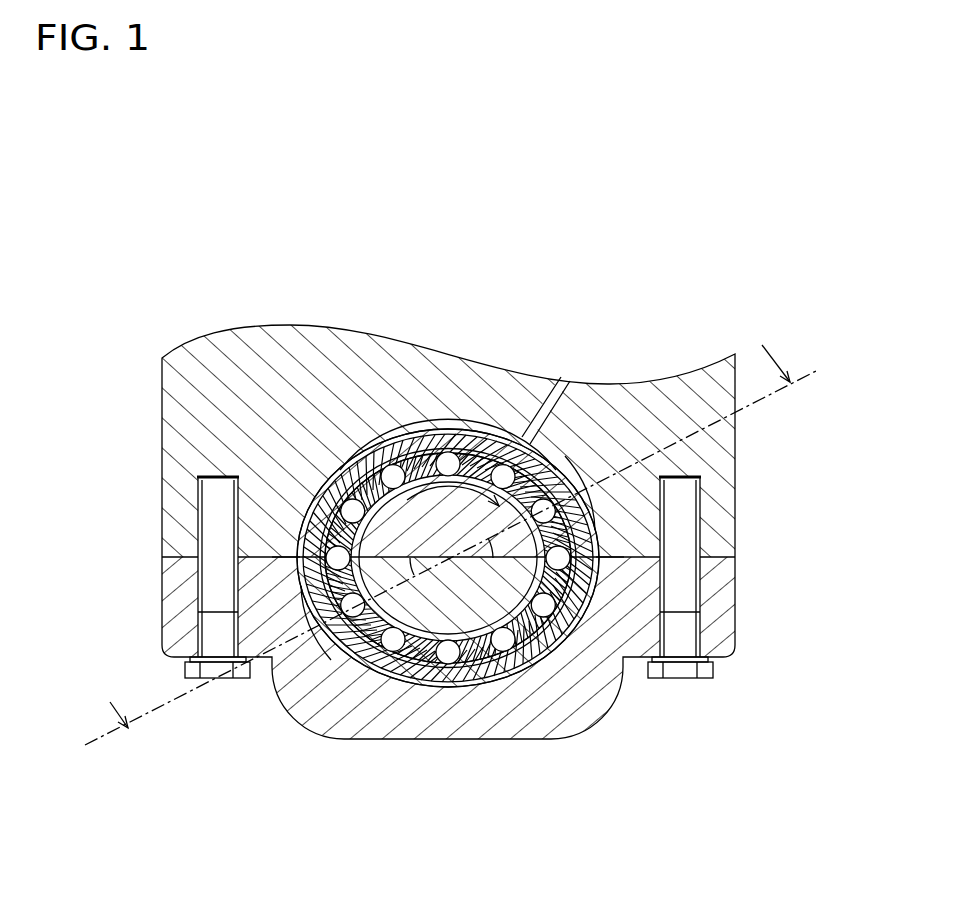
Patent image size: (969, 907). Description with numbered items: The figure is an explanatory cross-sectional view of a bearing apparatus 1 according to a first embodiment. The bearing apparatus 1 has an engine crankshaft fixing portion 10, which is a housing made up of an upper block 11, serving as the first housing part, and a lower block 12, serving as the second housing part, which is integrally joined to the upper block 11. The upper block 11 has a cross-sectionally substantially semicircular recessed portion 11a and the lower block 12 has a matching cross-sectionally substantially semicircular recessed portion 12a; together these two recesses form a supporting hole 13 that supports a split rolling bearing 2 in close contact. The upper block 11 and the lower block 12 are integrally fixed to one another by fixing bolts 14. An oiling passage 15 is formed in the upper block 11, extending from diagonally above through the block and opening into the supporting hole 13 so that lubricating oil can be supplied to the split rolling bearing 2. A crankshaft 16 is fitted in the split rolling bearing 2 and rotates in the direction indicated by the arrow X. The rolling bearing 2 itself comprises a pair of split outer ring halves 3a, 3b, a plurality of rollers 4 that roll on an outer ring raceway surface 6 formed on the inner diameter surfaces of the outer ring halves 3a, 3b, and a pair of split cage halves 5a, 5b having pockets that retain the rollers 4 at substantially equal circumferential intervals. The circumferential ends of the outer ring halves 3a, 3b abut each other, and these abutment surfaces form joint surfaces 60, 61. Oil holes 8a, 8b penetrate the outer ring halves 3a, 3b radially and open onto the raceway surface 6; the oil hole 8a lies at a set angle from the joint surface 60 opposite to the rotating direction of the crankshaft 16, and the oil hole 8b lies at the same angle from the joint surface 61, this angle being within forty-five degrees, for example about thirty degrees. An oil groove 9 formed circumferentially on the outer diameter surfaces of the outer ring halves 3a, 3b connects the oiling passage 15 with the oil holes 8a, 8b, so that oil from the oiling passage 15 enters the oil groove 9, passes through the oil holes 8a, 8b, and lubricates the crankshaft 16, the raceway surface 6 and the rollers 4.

The bearing apparatus 1 is at (176, 229).
The split rolling bearing 2 is at (362, 672).
The split outer ring half 3a is at (330, 478).
The split outer ring half 3b is at (305, 668).
The rollers 4 is at (428, 672).
The split cage half 5a is at (345, 486).
The split cage half 5b is at (484, 675).
The outer ring raceway surface 6 is at (320, 488).
The oil hole 8a is at (592, 490).
The oil hole 8b is at (315, 632).
The oil groove 9 is at (390, 510).
The engine crankshaft fixing portion 10 is at (732, 306).
The upper block 11 is at (417, 368).
The recessed portion 11a is at (452, 428).
The lower block 12 is at (573, 707).
The recessed portion 12a is at (527, 670).
The supporting hole 13 is at (389, 432).
The fixing bolts 14 is at (193, 668).
The oiling passage 15 is at (565, 377).
The crankshaft 16 is at (368, 495).
The joint surface 60 is at (604, 563).
The joint surface 61 is at (293, 562).